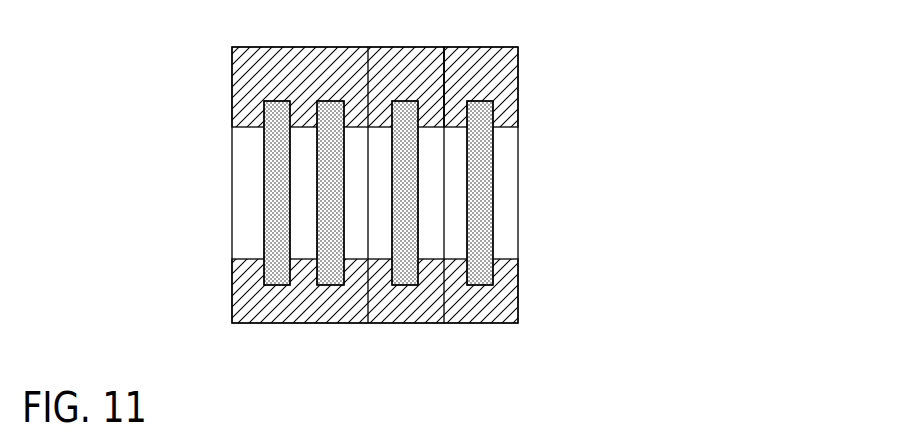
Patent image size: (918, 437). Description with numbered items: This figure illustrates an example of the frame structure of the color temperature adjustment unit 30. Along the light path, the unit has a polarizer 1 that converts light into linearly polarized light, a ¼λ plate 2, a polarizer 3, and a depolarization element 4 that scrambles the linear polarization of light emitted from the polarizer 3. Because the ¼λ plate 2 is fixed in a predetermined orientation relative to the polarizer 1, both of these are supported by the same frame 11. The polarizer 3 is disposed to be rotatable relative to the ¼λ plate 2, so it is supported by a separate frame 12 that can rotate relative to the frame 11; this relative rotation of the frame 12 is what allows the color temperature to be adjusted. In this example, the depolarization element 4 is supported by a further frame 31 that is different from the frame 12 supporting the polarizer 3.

The color temperature adjustment unit 30 is at (690, 50).
The frame 11 is at (248, 93).
The frame 31 is at (503, 88).
The frame 12 is at (405, 308).
The polarizer 1 is at (278, 100).
The ¼λ plate 2 is at (333, 100).
The polarizer 3 is at (408, 100).
The depolarization element 4 is at (483, 100).